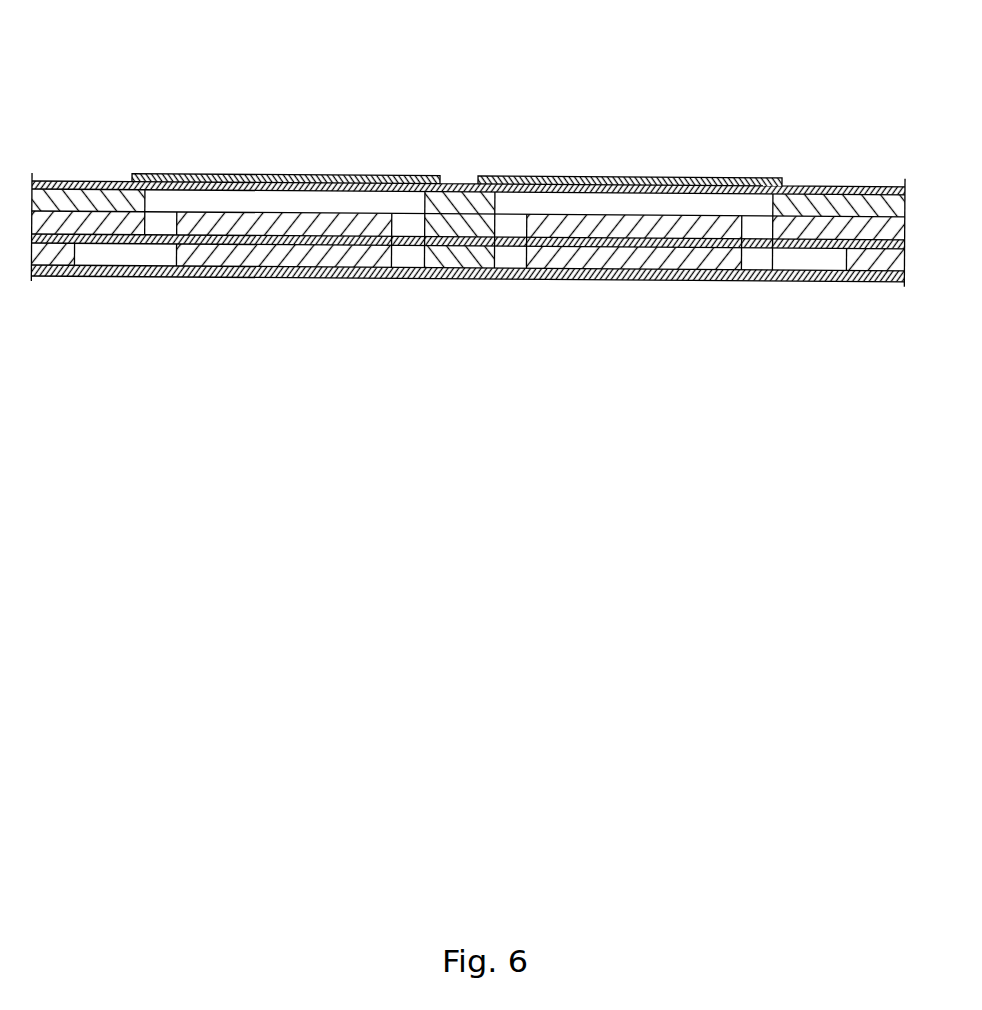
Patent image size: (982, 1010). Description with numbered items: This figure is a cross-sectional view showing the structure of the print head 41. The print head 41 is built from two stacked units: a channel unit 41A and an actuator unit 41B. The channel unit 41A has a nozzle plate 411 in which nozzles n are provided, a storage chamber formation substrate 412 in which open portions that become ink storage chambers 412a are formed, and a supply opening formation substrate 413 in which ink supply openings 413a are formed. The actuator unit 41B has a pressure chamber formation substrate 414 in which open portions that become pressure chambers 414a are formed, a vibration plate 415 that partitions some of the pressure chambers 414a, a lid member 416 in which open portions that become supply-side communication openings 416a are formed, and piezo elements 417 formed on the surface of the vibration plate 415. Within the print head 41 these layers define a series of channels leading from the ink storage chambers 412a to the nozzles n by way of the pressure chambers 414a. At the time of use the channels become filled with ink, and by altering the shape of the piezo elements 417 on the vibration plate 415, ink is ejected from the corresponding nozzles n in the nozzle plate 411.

The print head 41 is at (390, 108).
The channel unit 41A is at (253, 343).
The actuator unit 41B is at (753, 88).
The nozzle plate 411 is at (93, 270).
The storage chamber formation substrate 412 is at (203, 252).
The ink storage chamber 412a is at (93, 250).
The supply opening formation substrate 413 is at (265, 243).
The ink supply opening 413a is at (162, 238).
The pressure chamber formation substrate 414 is at (455, 196).
The pressure chamber 414a is at (285, 203).
The vibration plate 415 is at (588, 177).
The lid member 416 is at (668, 211).
The supply-side communication opening 416a is at (760, 228).
The piezo element 417 is at (737, 177).
The nozzle n is at (510, 281).